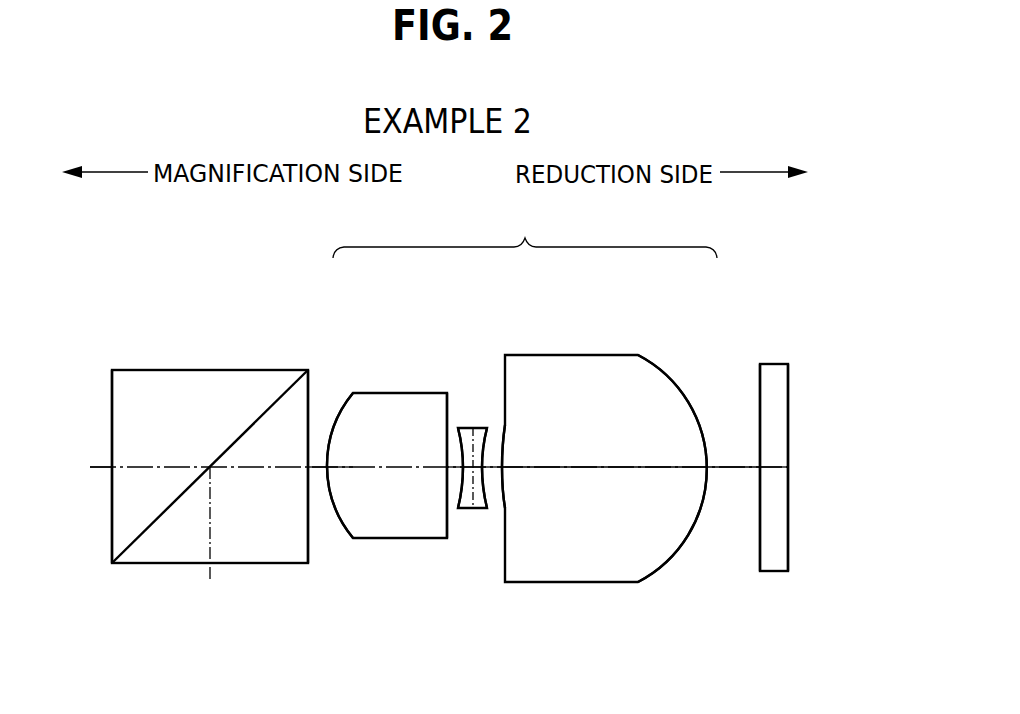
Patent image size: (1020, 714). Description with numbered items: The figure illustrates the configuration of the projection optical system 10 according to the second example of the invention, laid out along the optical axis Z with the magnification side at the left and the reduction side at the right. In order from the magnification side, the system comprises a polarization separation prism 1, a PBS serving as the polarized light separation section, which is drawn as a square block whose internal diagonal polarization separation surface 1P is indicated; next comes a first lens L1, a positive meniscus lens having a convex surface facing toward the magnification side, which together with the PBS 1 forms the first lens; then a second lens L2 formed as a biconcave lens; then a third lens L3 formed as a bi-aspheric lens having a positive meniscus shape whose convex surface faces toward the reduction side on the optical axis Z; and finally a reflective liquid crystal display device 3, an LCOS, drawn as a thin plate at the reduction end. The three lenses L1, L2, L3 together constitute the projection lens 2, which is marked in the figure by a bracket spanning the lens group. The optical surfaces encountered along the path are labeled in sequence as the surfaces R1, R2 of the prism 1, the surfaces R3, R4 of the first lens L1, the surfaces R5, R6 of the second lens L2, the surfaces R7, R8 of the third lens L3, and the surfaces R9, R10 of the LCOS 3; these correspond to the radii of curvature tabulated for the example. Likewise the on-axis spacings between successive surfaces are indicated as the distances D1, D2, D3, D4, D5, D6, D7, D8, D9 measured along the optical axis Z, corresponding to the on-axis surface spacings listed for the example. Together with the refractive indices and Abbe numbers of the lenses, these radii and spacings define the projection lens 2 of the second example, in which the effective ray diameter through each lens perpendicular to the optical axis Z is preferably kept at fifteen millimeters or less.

The projection optical system 10 is at (151, 263).
The polarization separation prism 1 is at (187, 373).
The polarization separation surface 1P is at (243, 430).
The projection lens 2 is at (525, 231).
The reflective liquid crystal display device 3 is at (777, 372).
The surface R1 (prism entrance surface) R1 is at (112, 400).
The surface R2 (prism exit surface) R2 is at (305, 372).
The surface R3 (L1 magnification-side surface) R3 is at (340, 410).
The surface R4 (L1 reduction-side surface) R4 is at (447, 415).
The surface R5 (L2 magnification-side surface) R5 is at (458, 440).
The surface R6 (L2 reduction-side surface) R6 is at (487, 440).
The surface R7 (L3 magnification-side surface) R7 is at (506, 460).
The surface R8 (L3 reduction-side surface) R8 is at (706, 476).
The surface R9 (plate front surface) R9 is at (759, 420).
The surface R10 (plate rear surface) R10 is at (789, 412).
The distance D1 is at (132, 470).
The distance D2 is at (319, 472).
The distance D3 is at (373, 470).
The distance D4 is at (449, 470).
The distance D5 is at (463, 473).
The distance D6 is at (502, 472).
The distance D7 is at (627, 470).
The distance D8 is at (742, 470).
The distance D9 is at (773, 470).
The first lens L1 is at (390, 398).
The second lens L2 is at (473, 428).
The third lens L3 is at (590, 362).
The optical axis Z is at (498, 473).